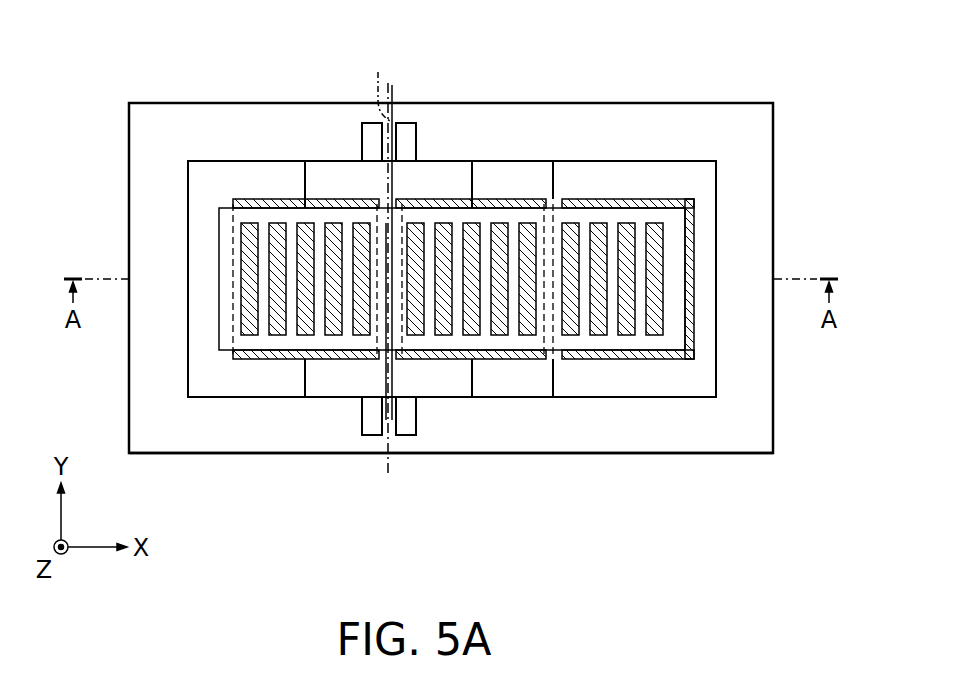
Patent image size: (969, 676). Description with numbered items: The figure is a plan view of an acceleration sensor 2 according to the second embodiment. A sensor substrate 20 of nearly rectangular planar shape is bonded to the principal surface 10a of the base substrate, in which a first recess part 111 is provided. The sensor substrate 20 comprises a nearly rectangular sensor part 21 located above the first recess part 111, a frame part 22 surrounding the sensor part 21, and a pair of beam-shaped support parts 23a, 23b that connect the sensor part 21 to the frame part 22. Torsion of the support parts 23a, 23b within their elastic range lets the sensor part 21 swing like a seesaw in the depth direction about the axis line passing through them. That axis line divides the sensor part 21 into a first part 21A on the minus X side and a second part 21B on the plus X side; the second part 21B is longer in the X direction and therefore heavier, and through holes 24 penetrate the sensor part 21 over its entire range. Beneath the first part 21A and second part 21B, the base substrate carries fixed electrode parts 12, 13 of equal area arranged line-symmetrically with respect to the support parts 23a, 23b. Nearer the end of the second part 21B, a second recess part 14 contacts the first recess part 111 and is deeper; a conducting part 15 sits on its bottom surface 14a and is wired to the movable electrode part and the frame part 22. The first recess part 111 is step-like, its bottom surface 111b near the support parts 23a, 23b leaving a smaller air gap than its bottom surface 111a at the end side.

The acceleration sensor 2 is at (722, 52).
The sensor substrate 20 is at (653, 99).
The frame part 22 is at (562, 117).
The principal surface 10a is at (572, 432).
The first recess part 111 is at (189, 378).
The bottom surface 111a is at (240, 387).
The bottom surface 111b is at (343, 387).
The fixed electrode part 12 is at (293, 360).
The fixed electrode part 13 is at (452, 362).
The second recess part 14 is at (716, 378).
The bottom surface 14a is at (667, 387).
The conducting part 15 is at (617, 362).
The sensor part 21 is at (380, 230).
The first part 21A is at (266, 222).
The second part 21B is at (488, 222).
The support part 23a is at (396, 143).
The support part 23b is at (396, 415).
The through hole 24 is at (626, 222).